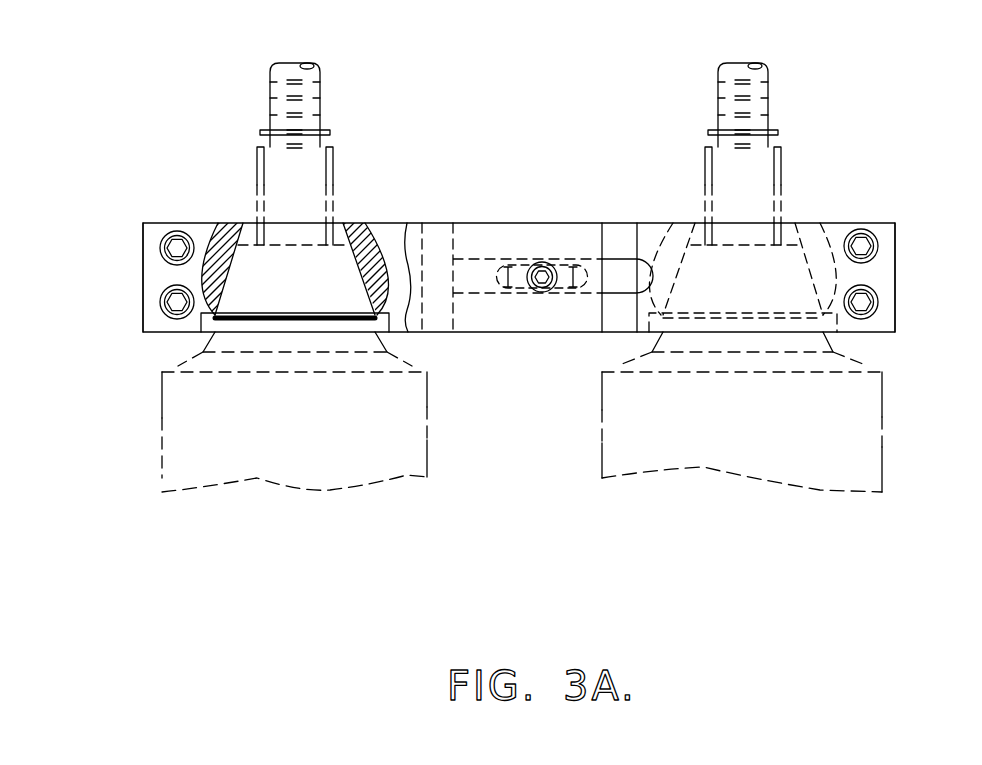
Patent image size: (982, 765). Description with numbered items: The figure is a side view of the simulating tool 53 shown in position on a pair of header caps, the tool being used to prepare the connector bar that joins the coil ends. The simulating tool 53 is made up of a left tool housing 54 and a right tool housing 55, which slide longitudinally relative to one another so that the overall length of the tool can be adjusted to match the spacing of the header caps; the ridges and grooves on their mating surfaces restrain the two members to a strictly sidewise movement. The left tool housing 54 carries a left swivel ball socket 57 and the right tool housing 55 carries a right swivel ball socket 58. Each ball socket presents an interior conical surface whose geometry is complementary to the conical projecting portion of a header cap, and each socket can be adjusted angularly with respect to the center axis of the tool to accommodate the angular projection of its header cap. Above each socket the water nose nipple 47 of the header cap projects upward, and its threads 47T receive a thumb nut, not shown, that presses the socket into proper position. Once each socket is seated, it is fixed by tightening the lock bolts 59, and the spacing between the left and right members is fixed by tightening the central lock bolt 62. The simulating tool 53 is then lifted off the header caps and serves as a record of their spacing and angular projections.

The water nose nipple 47 is at (320, 88).
The threads of water nose nipple 47T is at (332, 163).
The simulating tool 53 is at (483, 333).
The left tool housing 54 is at (175, 222).
The right tool housing 55 is at (872, 222).
The left swivel ball socket 57 is at (364, 223).
The right swivel ball socket 58 is at (683, 223).
The lock bolts 59 is at (160, 295).
The lock bolt 62 is at (550, 267).